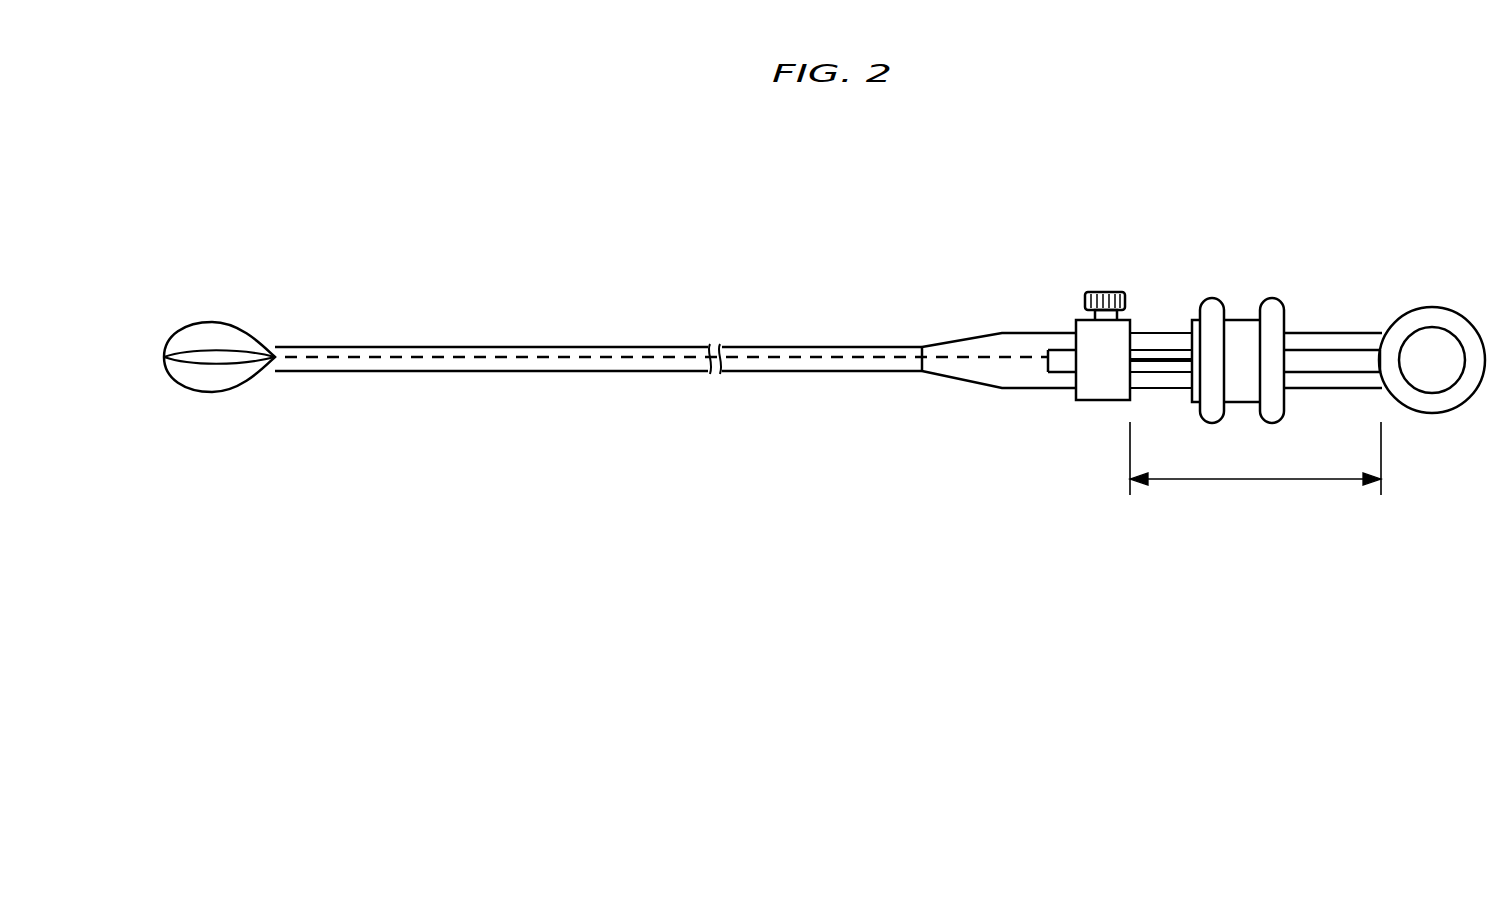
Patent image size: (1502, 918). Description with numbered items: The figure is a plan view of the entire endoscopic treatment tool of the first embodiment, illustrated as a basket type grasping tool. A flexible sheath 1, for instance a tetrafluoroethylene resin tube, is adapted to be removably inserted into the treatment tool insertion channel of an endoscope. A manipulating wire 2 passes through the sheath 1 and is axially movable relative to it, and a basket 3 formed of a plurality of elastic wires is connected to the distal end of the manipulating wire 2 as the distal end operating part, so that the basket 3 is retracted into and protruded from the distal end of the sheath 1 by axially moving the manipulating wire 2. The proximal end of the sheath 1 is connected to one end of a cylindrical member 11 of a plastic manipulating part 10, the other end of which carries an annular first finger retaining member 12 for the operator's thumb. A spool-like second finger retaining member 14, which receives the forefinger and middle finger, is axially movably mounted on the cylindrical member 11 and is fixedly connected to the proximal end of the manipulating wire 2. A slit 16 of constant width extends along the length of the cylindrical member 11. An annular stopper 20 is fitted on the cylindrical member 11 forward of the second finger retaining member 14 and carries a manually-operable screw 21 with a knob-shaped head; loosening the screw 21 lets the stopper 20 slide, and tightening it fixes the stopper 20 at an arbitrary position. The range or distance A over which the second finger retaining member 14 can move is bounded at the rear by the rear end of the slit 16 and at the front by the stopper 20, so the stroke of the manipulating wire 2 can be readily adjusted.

The flexible sheath 1 is at (767, 347).
The manipulating wire 2 is at (463, 347).
The basket 3 is at (218, 323).
The manipulating part 10 is at (1350, 259).
The cylindrical member 11 is at (1160, 333).
The first finger retaining member 12 is at (1432, 318).
The second finger retaining member 14 is at (1240, 326).
The slit 16 is at (1318, 349).
The stopper 20 is at (1097, 393).
The screw 21 is at (1101, 292).
The range or distance A is at (1262, 479).